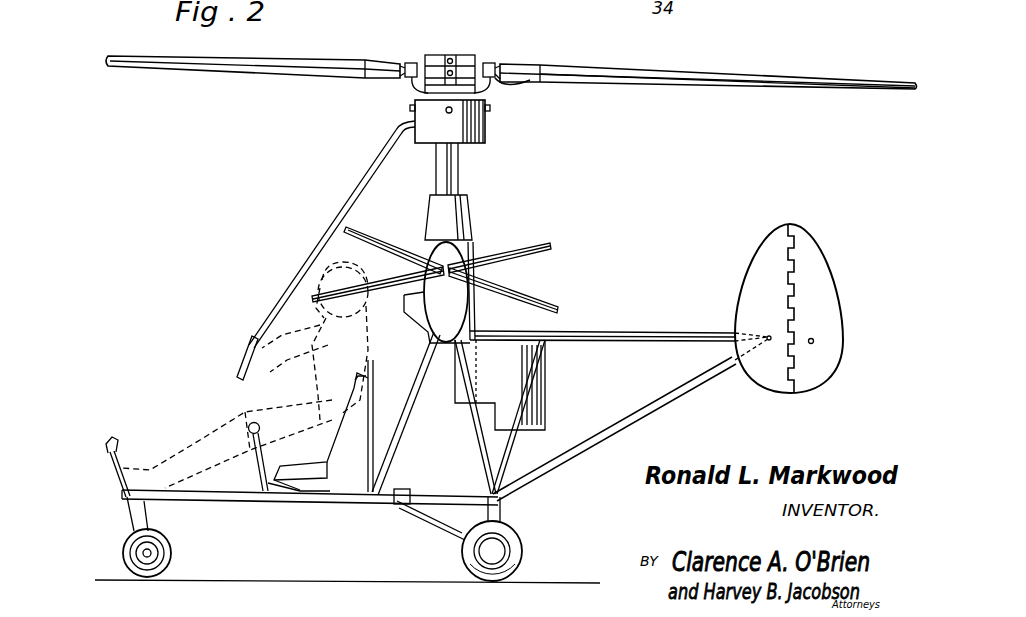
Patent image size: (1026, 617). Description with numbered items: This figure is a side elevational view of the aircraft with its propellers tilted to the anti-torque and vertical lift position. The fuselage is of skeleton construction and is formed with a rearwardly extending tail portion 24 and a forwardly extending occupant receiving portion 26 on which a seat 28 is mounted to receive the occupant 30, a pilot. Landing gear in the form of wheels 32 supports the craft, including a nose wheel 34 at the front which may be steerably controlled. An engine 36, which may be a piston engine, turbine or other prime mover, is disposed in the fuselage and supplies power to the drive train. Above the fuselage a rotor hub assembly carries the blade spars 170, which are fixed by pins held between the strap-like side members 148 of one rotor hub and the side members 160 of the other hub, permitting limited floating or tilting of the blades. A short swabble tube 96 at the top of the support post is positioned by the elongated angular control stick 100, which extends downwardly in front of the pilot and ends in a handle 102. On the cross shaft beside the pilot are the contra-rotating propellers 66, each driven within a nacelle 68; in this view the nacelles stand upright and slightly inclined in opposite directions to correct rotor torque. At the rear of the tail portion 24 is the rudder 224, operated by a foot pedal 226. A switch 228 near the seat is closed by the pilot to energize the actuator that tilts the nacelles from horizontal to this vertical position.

The tail portion 24 is at (675, 322).
The occupant receiving portion 26 is at (190, 503).
The seat 28 is at (349, 476).
The occupant 30 is at (183, 447).
The wheels 32 is at (517, 553).
The nose wheel 34 is at (158, 560).
The engine 36 is at (535, 406).
The contra-rotating propellers 66 is at (548, 303).
The nacelle 68 is at (457, 318).
The swabble tube 96 is at (458, 130).
The control stick 100 is at (372, 168).
The handle 102 is at (240, 346).
The side members 148 is at (472, 72).
The side members 160 is at (500, 78).
The blade spar 170 is at (657, 80).
The rudder 224 is at (810, 301).
The foot pedal 226 is at (120, 458).
The switch 228 is at (256, 487).